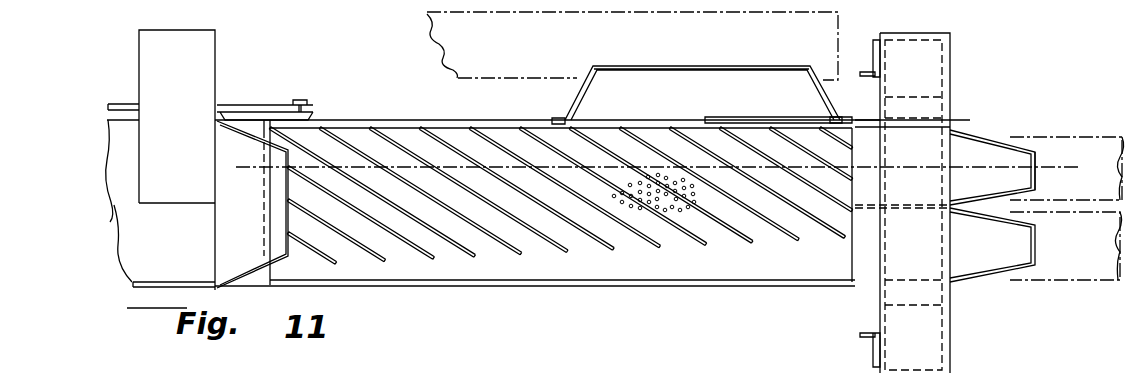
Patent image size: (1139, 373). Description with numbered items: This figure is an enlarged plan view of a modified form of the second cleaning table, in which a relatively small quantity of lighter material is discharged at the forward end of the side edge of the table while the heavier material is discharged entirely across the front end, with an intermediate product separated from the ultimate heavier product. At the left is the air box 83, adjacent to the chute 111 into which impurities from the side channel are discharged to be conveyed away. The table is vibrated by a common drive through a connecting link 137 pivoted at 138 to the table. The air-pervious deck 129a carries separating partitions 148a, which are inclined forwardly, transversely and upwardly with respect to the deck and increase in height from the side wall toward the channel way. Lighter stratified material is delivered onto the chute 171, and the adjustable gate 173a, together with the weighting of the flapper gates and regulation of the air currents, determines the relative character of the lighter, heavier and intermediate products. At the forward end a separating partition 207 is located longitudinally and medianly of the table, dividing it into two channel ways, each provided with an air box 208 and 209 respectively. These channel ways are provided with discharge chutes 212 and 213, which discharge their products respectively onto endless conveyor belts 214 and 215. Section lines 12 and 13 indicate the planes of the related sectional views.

The section line 12- 12 is at (240, 150).
The section line 13- 13 is at (912, 372).
The air box 83 is at (150, 161).
The chute 111 is at (233, 244).
The connecting link 137 is at (245, 104).
The pivot 138 is at (304, 100).
The separating partitions 148a is at (457, 242).
The air-pervious deck 129a is at (679, 212).
The chute 171 is at (577, 90).
The adjustable gate 173a is at (739, 117).
The separating partition 207 is at (865, 207).
The air box 208 is at (968, 256).
The air box 209 is at (930, 158).
The discharge chute 212 is at (988, 263).
The discharge chute 213 is at (990, 156).
The endless conveyor belt 214 is at (1078, 270).
The endless conveyor belt 215 is at (1097, 138).